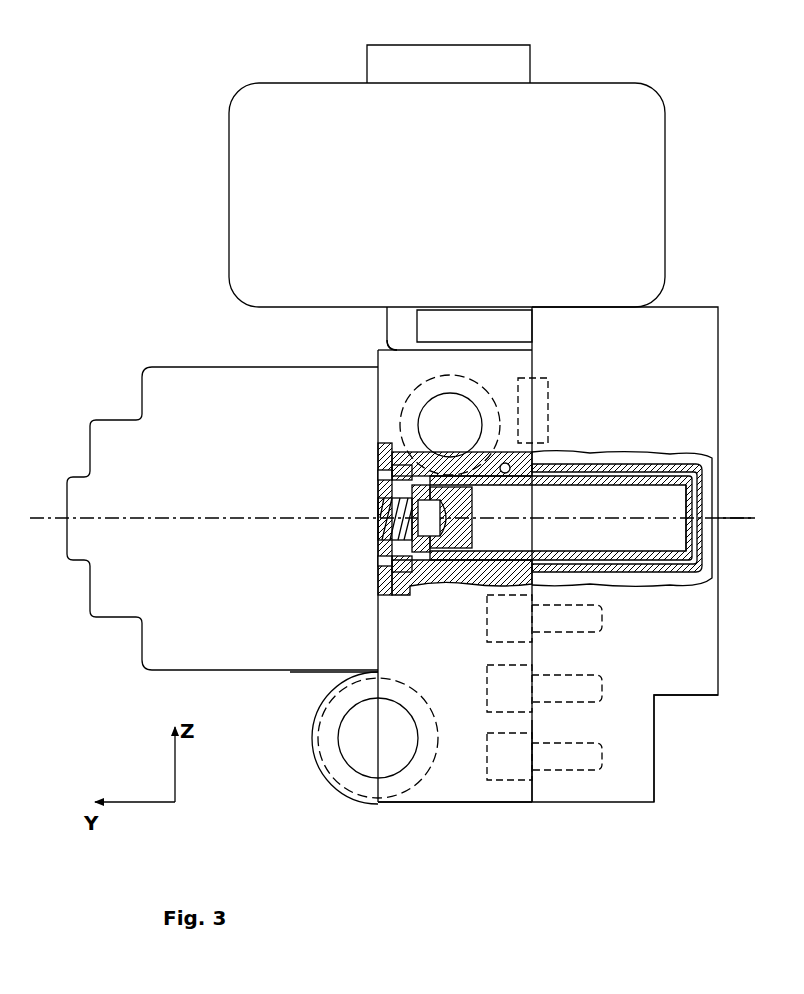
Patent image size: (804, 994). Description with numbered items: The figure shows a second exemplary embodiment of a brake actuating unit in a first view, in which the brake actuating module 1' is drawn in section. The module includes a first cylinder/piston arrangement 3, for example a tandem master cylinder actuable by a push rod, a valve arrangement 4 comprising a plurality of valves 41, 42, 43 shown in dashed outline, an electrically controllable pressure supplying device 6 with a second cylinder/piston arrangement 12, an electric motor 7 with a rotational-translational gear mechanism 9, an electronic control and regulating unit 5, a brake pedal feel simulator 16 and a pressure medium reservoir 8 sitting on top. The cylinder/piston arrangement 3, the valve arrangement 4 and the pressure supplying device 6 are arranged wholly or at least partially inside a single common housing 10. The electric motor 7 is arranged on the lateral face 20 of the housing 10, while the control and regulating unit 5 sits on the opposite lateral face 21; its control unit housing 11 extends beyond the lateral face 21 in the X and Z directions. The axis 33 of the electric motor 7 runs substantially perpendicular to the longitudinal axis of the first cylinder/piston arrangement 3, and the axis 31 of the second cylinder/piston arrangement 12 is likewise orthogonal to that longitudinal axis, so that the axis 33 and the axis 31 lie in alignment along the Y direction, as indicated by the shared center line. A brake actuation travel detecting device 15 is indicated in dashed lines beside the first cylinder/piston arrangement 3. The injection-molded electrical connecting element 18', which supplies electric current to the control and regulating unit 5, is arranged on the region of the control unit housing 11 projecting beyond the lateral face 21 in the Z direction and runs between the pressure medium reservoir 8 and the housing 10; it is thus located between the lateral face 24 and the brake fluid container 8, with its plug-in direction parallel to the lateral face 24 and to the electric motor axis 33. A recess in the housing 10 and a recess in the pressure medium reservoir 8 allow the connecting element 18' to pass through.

The brake actuating module 1' is at (409, 856).
The first cylinder/piston arrangement 3 is at (425, 426).
The valve arrangement 4 is at (472, 627).
The electronic control and regulating unit 5 is at (668, 662).
The electrically controllable pressure supplying device 6 is at (674, 472).
The electric motor 7 is at (178, 385).
The pressure medium reservoir 8 is at (583, 105).
The rotational-translational gear mechanism 9 is at (402, 560).
The housing 10 is at (468, 792).
The control unit housing 11 is at (640, 753).
The second cylinder/piston arrangement 12 is at (650, 534).
The brake actuation travel detecting device 15 is at (547, 393).
The brake pedal feel simulator 16 is at (362, 758).
The electrical connecting element 18' is at (429, 326).
The lateral face 20 is at (376, 352).
The lateral face 21 is at (538, 790).
The lateral face 24 is at (390, 380).
The axis 31 is at (742, 518).
The axis 33 is at (44, 518).
The valve 41 is at (497, 613).
The valve 42 is at (497, 695).
The valve 43 is at (506, 772).